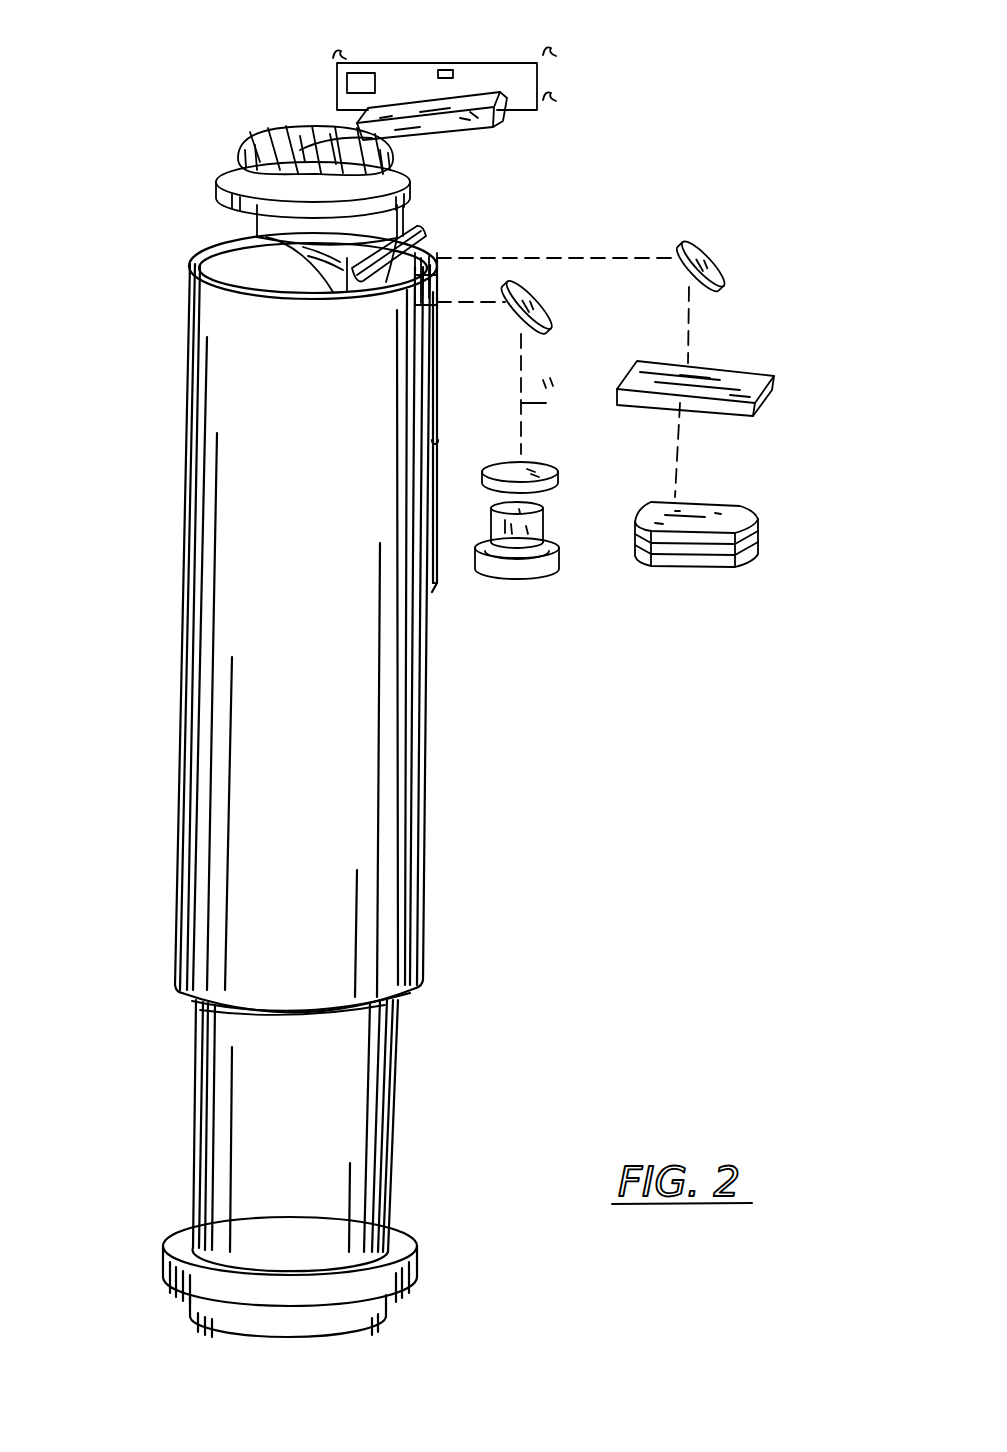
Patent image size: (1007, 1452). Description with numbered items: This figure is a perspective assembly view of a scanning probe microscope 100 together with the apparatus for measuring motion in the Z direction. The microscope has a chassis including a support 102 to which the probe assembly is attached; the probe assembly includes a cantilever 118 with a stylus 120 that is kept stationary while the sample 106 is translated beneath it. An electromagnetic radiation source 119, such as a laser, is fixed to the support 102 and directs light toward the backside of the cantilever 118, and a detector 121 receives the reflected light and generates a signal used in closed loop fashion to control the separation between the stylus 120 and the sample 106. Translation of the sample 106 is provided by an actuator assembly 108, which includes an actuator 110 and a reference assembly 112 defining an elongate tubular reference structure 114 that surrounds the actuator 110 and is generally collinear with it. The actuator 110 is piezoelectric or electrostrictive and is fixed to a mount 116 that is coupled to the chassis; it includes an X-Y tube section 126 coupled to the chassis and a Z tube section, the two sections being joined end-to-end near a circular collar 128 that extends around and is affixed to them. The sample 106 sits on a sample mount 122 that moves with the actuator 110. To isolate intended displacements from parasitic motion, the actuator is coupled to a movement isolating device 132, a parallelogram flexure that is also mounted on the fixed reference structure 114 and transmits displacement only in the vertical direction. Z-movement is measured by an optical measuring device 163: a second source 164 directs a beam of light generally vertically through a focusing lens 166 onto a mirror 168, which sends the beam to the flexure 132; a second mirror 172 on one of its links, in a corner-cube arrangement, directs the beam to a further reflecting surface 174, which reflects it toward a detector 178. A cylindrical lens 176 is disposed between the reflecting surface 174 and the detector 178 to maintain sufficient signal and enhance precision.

The scanning probe microscope 100 is at (664, 80).
The support 102 is at (538, 68).
The sample 106 is at (248, 143).
The actuator assembly 108 is at (122, 465).
The actuator 110 is at (421, 1057).
The reference assembly 112 is at (494, 241).
The reference structure 114 is at (430, 852).
The mount 116 is at (402, 1252).
The cantilever 118 is at (322, 136).
The electromagnetic radiation source 119 is at (455, 72).
The stylus 120 is at (295, 134).
The detector 121 is at (378, 72).
The sample mount 122 is at (216, 190).
The X-Y tube section 126 is at (372, 1203).
The circular collar 128 is at (253, 1010).
The movement isolating device 132 is at (408, 227).
The optical measuring device 163 is at (695, 213).
The second source of electromagnetic radiation 164 is at (537, 570).
The focusing lens 166 is at (545, 463).
The mirror 168 is at (549, 327).
The second mirror 172 is at (420, 232).
The reflecting surface 174 is at (709, 253).
The cylindrical lens 176 is at (745, 369).
The detector 178 is at (726, 499).